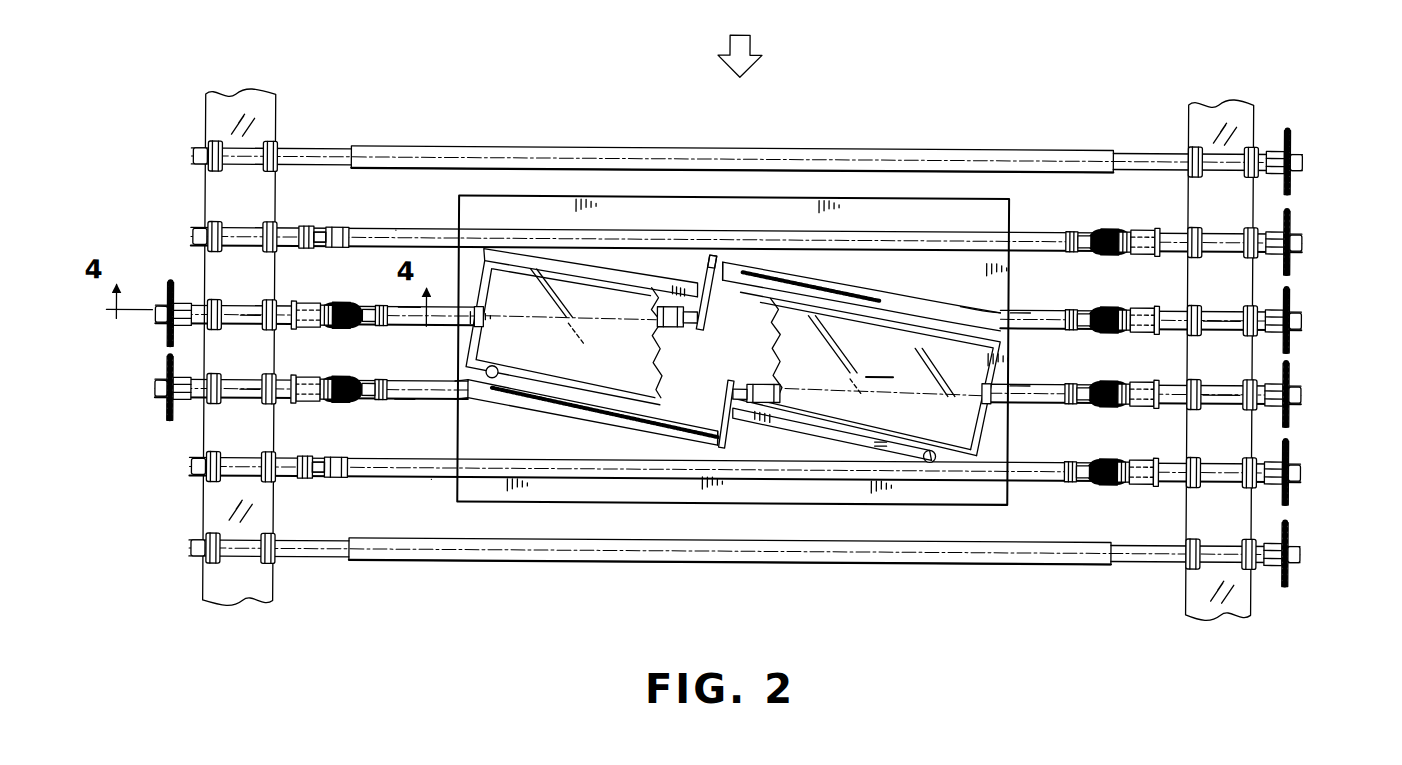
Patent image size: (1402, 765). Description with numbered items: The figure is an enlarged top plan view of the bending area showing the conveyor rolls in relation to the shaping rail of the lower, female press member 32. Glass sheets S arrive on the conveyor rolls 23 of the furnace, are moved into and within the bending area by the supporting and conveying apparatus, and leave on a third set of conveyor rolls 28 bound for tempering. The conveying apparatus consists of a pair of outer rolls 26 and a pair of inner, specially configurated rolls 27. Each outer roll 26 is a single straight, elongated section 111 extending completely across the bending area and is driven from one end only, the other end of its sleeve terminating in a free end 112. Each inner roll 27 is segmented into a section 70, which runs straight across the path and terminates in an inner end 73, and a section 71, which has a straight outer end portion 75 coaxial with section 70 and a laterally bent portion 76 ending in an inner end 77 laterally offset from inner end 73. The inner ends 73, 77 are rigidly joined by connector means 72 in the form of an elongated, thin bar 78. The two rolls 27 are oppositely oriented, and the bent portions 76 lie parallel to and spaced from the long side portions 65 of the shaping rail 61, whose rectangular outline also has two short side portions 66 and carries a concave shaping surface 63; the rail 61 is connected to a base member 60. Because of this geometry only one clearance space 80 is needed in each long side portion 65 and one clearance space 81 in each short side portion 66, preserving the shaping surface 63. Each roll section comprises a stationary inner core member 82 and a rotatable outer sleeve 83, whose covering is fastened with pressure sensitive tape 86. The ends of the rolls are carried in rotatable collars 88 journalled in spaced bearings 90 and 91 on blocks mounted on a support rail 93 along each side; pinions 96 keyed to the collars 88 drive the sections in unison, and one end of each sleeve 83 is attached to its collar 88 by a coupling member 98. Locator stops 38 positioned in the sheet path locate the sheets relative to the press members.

The conveyor rolls 23 is at (555, 149).
The outer rolls 26 is at (432, 226).
The inner, specially configurated rolls 27 is at (985, 298).
The third set of conveyor rolls 28 is at (602, 562).
The female press member 32 is at (755, 356).
The locator stops 38 is at (493, 380).
The base member 60 is at (850, 197).
The shaping rail 61 is at (626, 272).
The shaping surface 63 is at (640, 320).
The long side portions 65 is at (750, 302).
The short side portions 66 is at (482, 262).
The section 70 is at (400, 300).
The section 71 is at (906, 292).
The connector means 72 is at (713, 245).
The inner end 73 is at (662, 330).
The straight outer end portion 75 is at (1014, 308).
The laterally bent portion 76 is at (852, 290).
The inner end 77 is at (728, 266).
The bar 78 is at (702, 330).
The clearance space 80 is at (700, 278).
The clearance space 81 is at (487, 326).
The core member 82 is at (320, 250).
The sleeve 83 is at (395, 232).
The pressure sensitive tape 86 is at (342, 230).
The collar 88 is at (1208, 312).
The bearing 90 is at (1190, 226).
The bearing 91 is at (212, 176).
The support rail 93 is at (1200, 95).
The pinion 96 is at (1292, 232).
The coupling member 98 is at (1122, 226).
The straight, elongated section 111 is at (612, 233).
The free end 112 is at (307, 230).